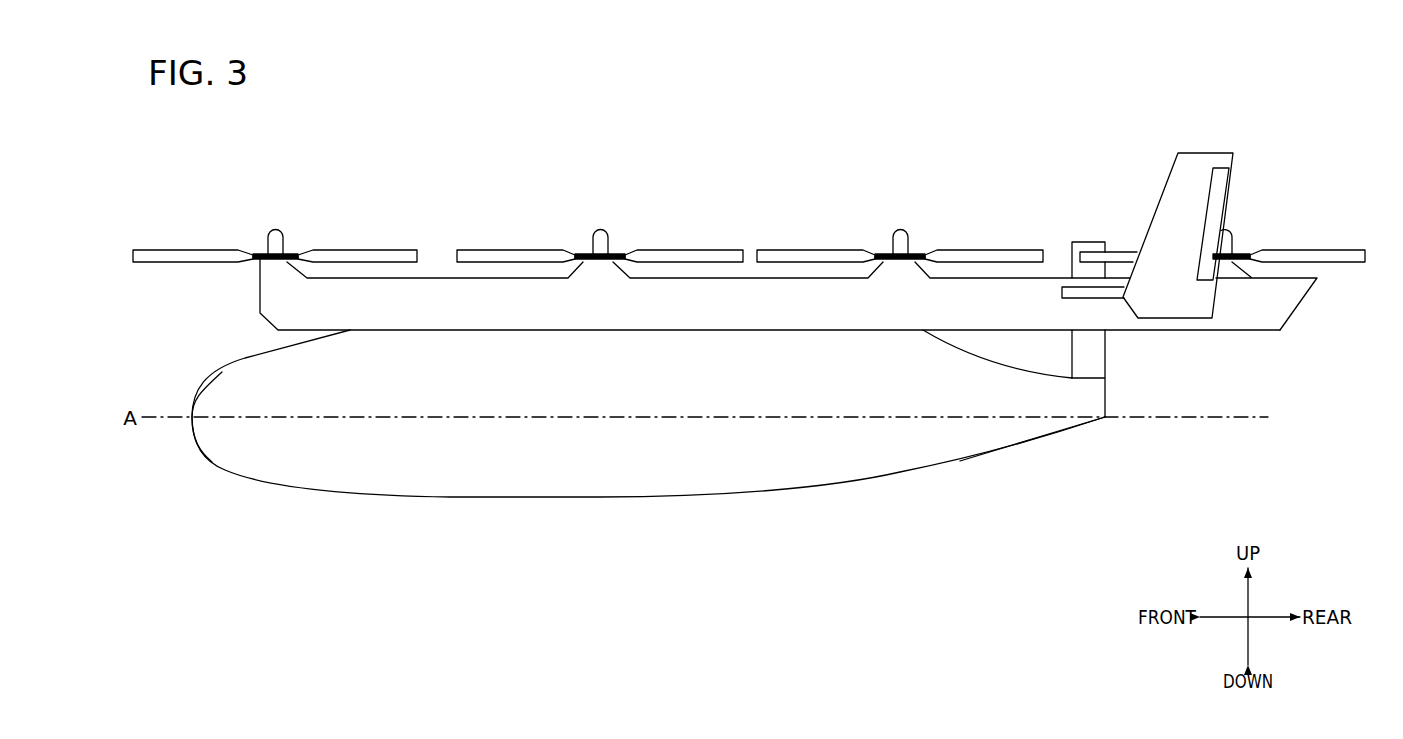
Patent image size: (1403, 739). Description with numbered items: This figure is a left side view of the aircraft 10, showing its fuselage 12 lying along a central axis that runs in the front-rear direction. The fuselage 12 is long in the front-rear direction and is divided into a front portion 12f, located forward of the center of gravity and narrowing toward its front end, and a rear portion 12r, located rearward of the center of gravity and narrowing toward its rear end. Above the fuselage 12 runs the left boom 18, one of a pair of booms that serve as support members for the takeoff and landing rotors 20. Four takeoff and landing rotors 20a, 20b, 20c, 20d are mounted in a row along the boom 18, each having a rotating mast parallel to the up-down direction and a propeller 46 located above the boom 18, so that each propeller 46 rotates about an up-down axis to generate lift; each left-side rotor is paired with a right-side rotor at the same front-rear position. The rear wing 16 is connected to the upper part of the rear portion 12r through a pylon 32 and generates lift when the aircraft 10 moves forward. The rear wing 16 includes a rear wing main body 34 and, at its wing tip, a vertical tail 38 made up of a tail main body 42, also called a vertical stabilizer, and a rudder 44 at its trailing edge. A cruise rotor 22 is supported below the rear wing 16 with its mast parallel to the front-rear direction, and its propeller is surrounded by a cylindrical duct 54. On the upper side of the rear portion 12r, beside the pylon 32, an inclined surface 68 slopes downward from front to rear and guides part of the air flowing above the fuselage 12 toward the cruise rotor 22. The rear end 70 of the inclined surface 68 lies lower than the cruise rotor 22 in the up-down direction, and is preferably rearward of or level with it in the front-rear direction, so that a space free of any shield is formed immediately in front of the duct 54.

The aircraft 10 is at (521, 130).
The fuselage 12 is at (515, 503).
The front portion 12f is at (222, 442).
The rear portion 12r is at (1000, 425).
The rear wing 16 is at (1161, 324).
The boom 18 is at (272, 297).
The takeoff and landing rotor 20 is at (778, 208).
The takeoff and landing rotor 20a is at (292, 228).
The takeoff and landing rotor 20b is at (613, 228).
The takeoff and landing rotor 20c is at (917, 228).
The takeoff and landing rotor 20d is at (1237, 230).
The cruise rotor 22 is at (1077, 238).
The pylon 32 is at (987, 350).
The rear wing main body 34 is at (1062, 293).
The vertical tail 38 is at (1176, 205).
The tail main body 42 is at (1182, 177).
The rudder 44 is at (1213, 222).
The propeller 46 is at (373, 248).
The cylindrical duct 54 is at (1093, 242).
The inclined surface 68 is at (1010, 365).
The rear end of the inclined surface 70 is at (1105, 377).